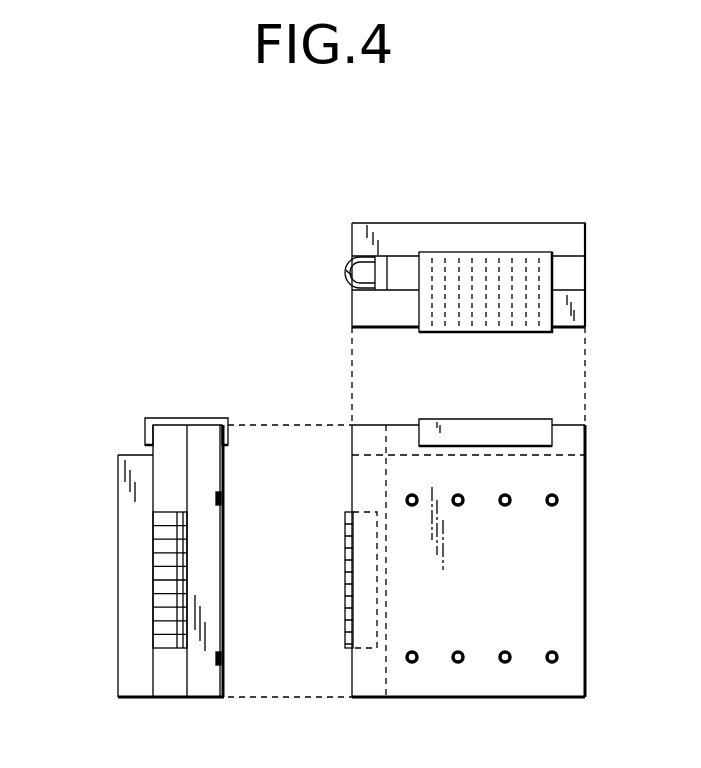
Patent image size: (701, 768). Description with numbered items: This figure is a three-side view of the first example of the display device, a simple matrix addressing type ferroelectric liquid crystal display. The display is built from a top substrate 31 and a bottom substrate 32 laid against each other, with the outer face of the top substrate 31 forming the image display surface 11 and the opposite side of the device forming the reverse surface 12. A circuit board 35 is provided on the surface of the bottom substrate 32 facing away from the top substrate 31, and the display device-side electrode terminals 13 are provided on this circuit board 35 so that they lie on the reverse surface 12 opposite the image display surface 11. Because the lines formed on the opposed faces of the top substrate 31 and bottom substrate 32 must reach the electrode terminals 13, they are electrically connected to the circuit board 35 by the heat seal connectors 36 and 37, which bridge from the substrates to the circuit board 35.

The image display surface 11 is at (472, 212).
The reverse surface 12 is at (562, 342).
The display device-side electrode terminals 13 is at (560, 500).
The top substrate 31 is at (588, 236).
The bottom substrate 32 is at (588, 273).
The circuit board 35 is at (588, 310).
The heat seal connector 36 is at (345, 272).
The heat seal connector 37 is at (482, 334).